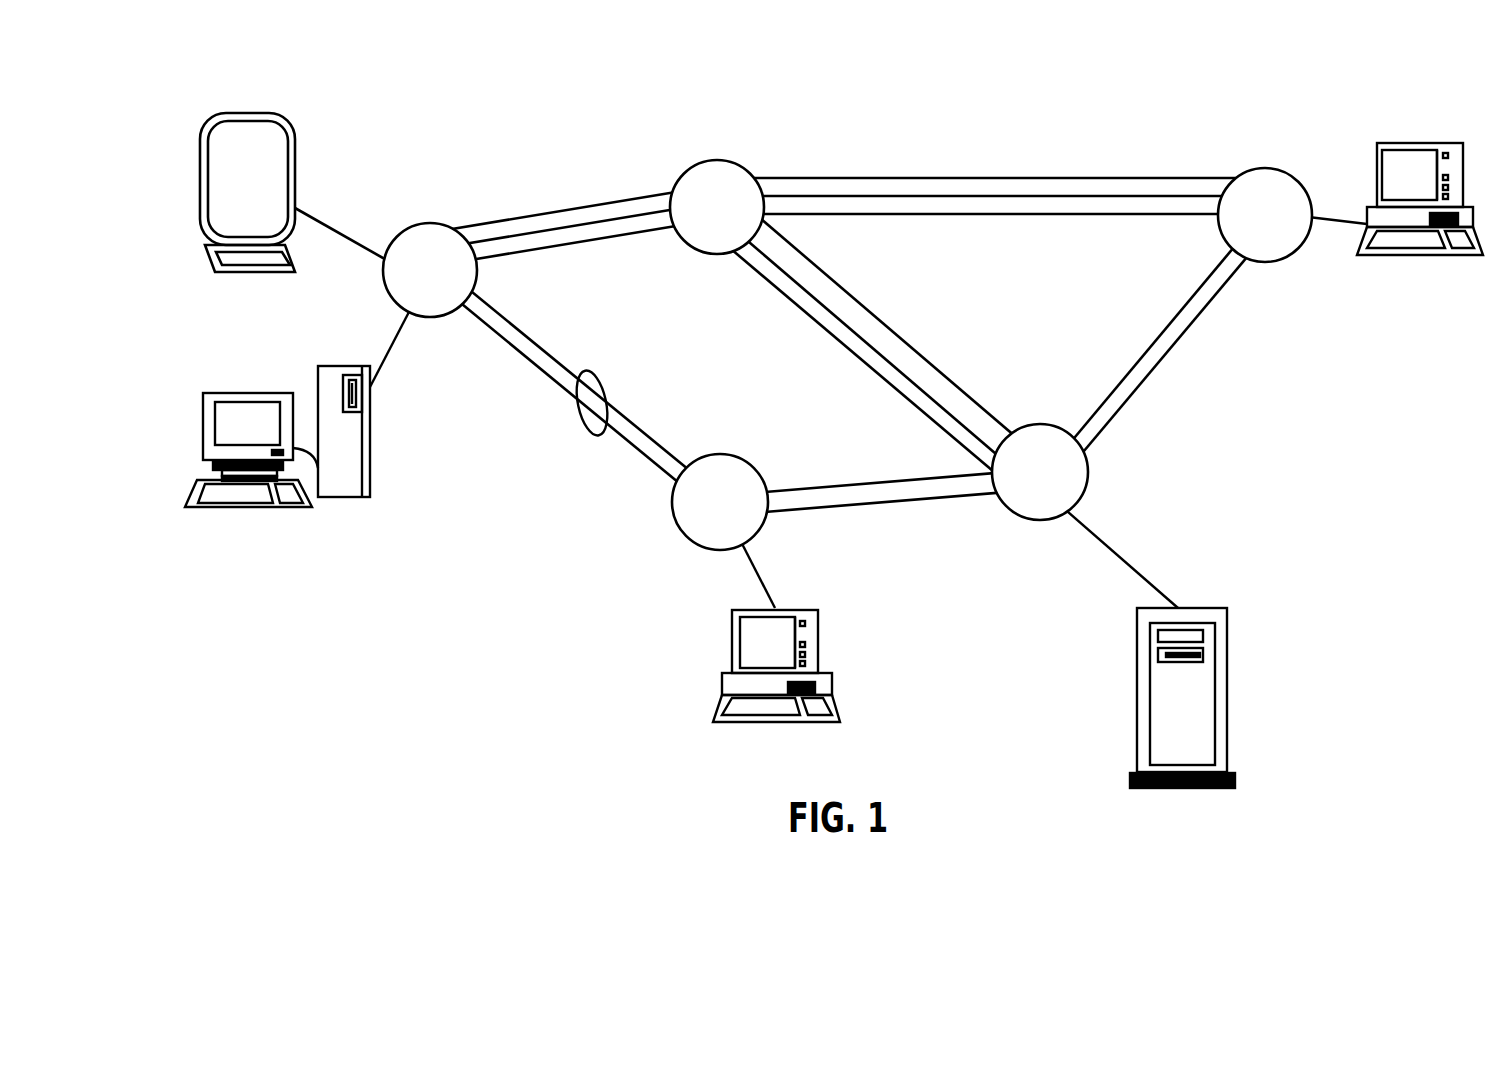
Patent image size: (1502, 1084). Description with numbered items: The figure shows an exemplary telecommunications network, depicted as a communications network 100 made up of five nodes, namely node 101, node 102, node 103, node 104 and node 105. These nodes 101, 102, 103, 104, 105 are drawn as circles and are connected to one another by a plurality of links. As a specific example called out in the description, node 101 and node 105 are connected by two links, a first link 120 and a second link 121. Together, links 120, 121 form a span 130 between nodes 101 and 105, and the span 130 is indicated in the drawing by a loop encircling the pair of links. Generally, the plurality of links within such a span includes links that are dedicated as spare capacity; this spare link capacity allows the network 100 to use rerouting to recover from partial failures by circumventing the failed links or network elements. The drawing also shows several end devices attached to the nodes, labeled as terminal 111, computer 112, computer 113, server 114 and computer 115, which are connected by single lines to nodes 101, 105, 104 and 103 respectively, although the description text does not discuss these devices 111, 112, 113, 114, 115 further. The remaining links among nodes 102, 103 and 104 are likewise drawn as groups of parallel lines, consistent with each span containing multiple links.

The communications network 100 is at (728, 353).
The node 101 is at (398, 227).
The node 102 is at (683, 163).
The node 103 is at (1287, 172).
The node 104 is at (1088, 478).
The node 105 is at (722, 453).
The host terminal 111 is at (290, 122).
The host computer 112 is at (213, 393).
The host computer 113 is at (731, 638).
The server 114 is at (1227, 625).
The host computer 115 is at (1428, 257).
The link 120 is at (500, 342).
The link 121 is at (517, 327).
The span 130 is at (583, 437).